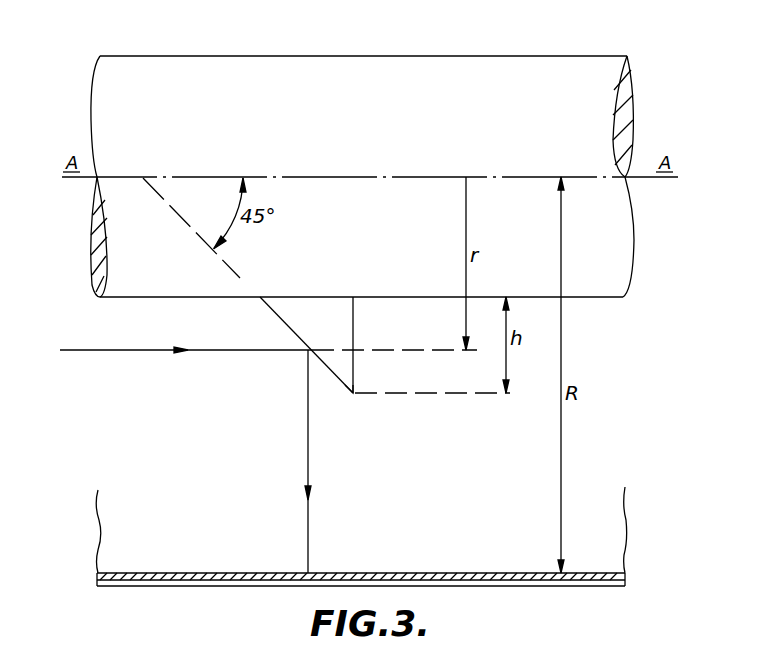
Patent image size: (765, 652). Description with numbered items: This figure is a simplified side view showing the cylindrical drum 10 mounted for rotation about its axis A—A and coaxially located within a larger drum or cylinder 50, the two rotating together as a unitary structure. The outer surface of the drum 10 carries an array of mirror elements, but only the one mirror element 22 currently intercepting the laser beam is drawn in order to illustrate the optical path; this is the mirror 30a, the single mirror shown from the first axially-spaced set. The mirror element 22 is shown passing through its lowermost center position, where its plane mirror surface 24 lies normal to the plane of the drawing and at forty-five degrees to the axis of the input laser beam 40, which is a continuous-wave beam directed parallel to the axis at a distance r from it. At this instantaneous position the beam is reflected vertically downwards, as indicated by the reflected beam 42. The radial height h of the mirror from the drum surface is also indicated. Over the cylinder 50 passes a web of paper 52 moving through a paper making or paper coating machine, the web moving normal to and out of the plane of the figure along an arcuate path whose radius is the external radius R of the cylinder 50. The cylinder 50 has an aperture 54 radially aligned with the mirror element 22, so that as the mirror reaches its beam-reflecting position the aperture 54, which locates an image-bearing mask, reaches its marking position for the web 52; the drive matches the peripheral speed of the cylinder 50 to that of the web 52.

The cylindrical drum 10 is at (457, 63).
The mirror element 22 is at (355, 322).
The plane mirror surface 24 is at (270, 310).
The mirror of first set 30a is at (355, 370).
The laser beam 40 is at (83, 350).
The reflected beam 42 is at (307, 417).
The cylinder 50 is at (612, 570).
The web of paper 52 is at (603, 586).
The aperture 54 is at (270, 573).